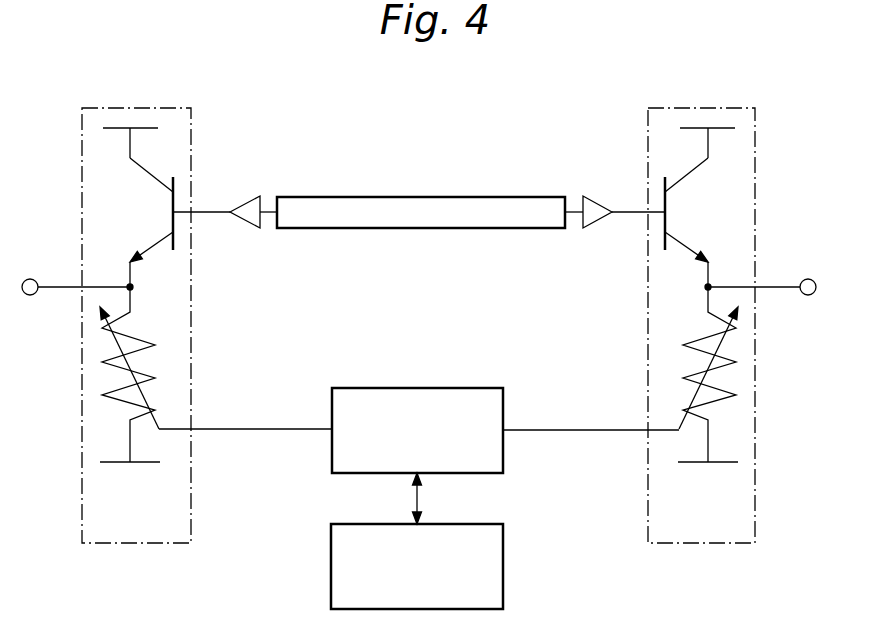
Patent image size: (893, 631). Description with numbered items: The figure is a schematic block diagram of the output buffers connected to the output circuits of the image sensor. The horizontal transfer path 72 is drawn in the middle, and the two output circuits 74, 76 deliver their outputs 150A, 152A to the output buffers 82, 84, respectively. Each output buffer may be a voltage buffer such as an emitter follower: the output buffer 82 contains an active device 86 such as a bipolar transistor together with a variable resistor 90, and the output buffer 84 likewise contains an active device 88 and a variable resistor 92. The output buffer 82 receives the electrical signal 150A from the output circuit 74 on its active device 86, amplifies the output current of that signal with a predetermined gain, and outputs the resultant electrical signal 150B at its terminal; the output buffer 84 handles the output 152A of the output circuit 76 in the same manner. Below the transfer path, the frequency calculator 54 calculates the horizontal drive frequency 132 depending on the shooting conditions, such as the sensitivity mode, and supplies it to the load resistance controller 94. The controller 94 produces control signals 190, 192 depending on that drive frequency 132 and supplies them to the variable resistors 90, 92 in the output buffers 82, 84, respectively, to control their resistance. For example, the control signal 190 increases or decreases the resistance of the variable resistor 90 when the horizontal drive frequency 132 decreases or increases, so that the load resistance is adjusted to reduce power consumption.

The frequency calculator 54 is at (505, 566).
The horizontal transfer path 72 is at (533, 197).
The output circuit 74 is at (246, 198).
The output circuit 76 is at (596, 198).
The output buffer 82 is at (176, 106).
The output buffer 84 is at (720, 106).
The active device 86 is at (118, 196).
The active device 88 is at (722, 196).
The variable resistor 90 is at (100, 434).
The variable resistor 92 is at (730, 436).
The load resistance controller 94 is at (505, 412).
The drive frequency 132 is at (413, 490).
The electrical signal 150A is at (218, 214).
The electrical signal 150B is at (62, 289).
The output 152A is at (624, 214).
The control signal 190 is at (270, 431).
The control signal 192 is at (575, 432).